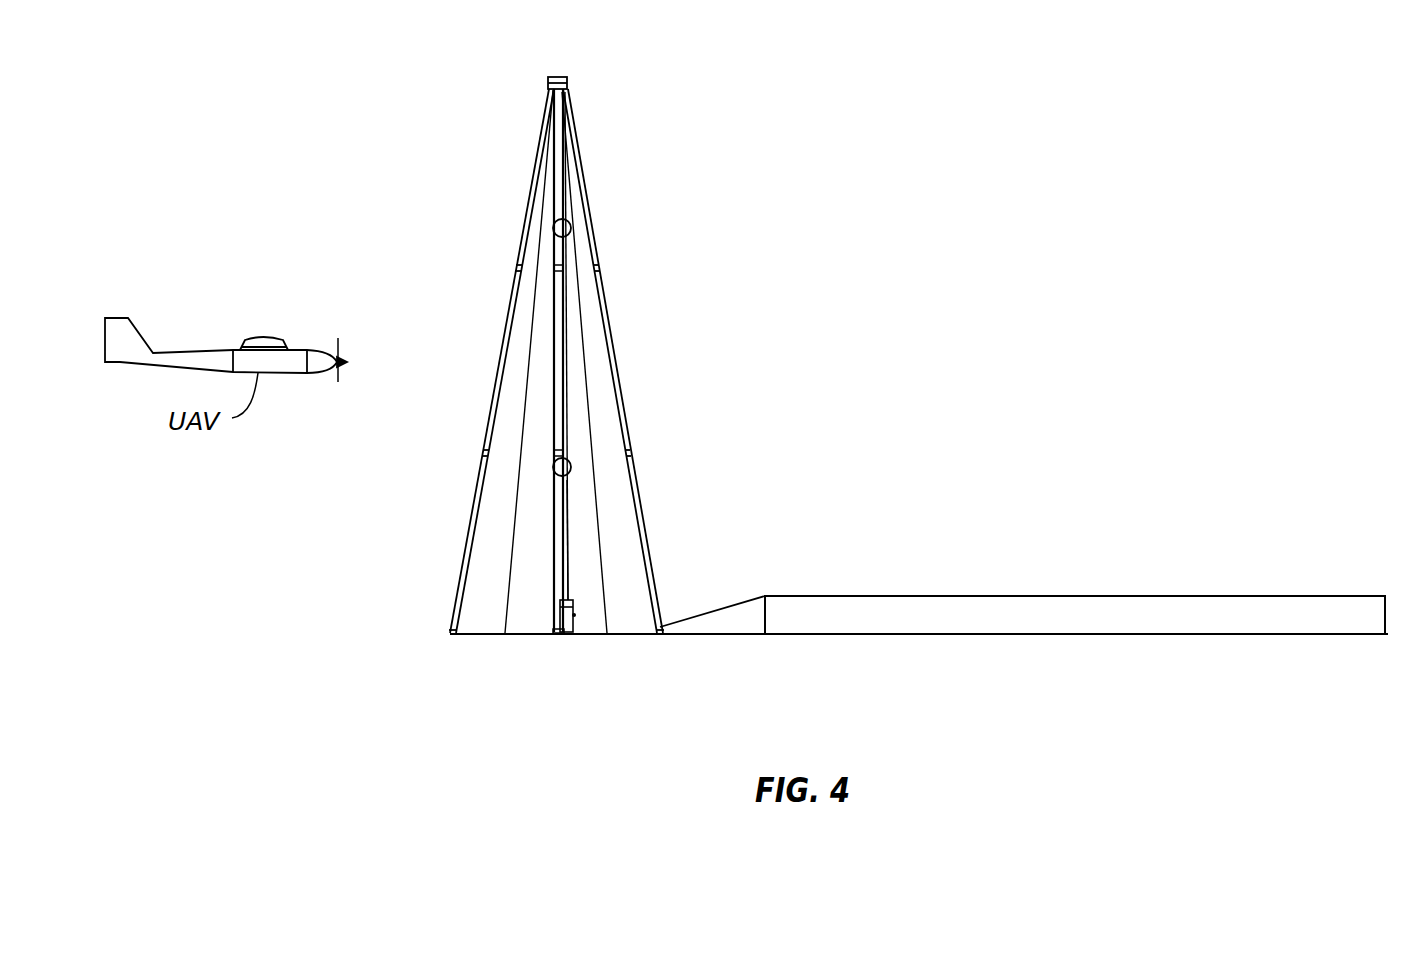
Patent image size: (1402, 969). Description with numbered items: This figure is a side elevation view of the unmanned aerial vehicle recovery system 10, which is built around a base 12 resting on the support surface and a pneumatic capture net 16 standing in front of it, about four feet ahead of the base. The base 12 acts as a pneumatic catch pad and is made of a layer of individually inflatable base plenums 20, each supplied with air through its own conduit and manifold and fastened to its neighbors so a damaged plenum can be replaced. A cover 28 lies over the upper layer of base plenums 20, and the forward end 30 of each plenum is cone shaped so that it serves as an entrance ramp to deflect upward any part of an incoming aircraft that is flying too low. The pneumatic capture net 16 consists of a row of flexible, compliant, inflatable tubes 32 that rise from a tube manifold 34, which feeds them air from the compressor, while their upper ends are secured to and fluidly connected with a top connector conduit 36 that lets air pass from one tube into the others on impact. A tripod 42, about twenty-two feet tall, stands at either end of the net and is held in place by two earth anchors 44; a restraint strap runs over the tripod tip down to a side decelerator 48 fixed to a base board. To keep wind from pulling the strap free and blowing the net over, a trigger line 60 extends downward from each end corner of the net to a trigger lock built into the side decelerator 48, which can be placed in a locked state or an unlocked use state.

The UAV recovery system 10 is at (1135, 175).
The base 12 is at (1083, 598).
The pneumatic capture net 16 is at (569, 440).
The base plenum 20 is at (855, 622).
The cover 28 is at (967, 595).
The forward end 30 is at (708, 627).
The inflatable tube 32 is at (565, 421).
The tube manifold 34 is at (571, 467).
The top connector conduit 36 is at (571, 228).
The tripod 42 is at (612, 333).
The earth anchor 44 is at (602, 538).
The side decelerator 48 is at (565, 620).
The trigger line 60 is at (565, 577).